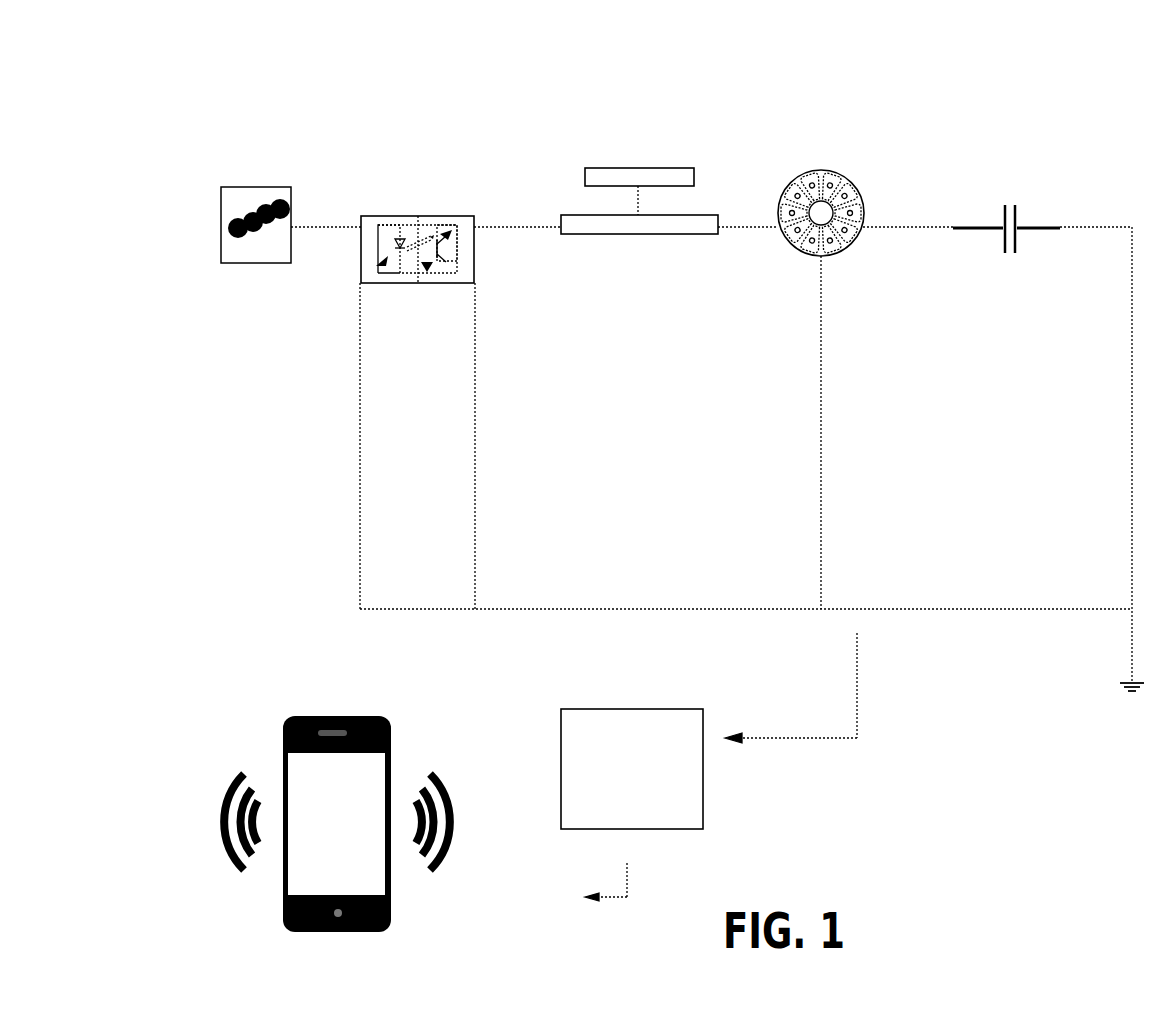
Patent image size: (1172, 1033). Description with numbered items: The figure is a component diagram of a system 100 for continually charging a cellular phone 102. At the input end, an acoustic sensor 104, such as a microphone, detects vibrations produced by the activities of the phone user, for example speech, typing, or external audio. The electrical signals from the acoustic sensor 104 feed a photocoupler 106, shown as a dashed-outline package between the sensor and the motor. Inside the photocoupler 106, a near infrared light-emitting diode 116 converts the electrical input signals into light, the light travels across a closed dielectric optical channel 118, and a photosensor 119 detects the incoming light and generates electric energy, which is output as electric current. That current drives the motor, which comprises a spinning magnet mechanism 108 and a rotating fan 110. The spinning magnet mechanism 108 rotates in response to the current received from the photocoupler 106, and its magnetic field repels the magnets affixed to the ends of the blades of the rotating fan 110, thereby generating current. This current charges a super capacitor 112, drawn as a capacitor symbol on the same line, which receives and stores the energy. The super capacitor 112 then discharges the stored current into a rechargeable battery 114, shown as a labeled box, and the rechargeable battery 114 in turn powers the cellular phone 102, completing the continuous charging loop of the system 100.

The system 100 is at (284, 62).
The cellular phone 102 is at (282, 687).
The acoustic sensor 104 is at (222, 187).
The photocoupler 106 is at (410, 202).
The spinning magnet mechanism 108 is at (597, 150).
The rotating fan 110 is at (802, 130).
The super capacitor 112 is at (1012, 172).
The rechargeable battery 114 is at (568, 692).
The near infrared light-emitting diode 116 is at (363, 268).
The closed optical channel 118 is at (430, 270).
The photosensor 119 is at (448, 233).